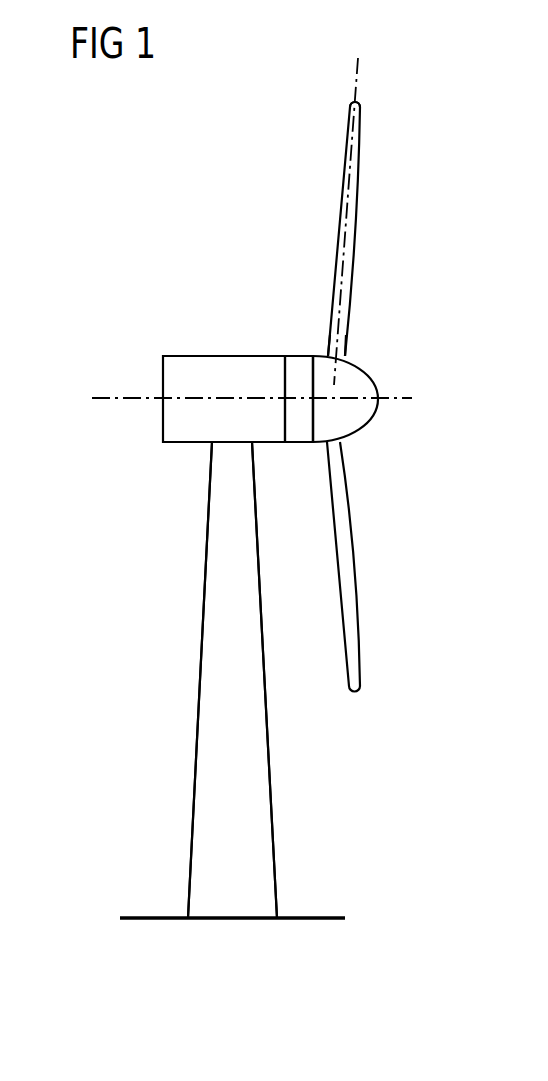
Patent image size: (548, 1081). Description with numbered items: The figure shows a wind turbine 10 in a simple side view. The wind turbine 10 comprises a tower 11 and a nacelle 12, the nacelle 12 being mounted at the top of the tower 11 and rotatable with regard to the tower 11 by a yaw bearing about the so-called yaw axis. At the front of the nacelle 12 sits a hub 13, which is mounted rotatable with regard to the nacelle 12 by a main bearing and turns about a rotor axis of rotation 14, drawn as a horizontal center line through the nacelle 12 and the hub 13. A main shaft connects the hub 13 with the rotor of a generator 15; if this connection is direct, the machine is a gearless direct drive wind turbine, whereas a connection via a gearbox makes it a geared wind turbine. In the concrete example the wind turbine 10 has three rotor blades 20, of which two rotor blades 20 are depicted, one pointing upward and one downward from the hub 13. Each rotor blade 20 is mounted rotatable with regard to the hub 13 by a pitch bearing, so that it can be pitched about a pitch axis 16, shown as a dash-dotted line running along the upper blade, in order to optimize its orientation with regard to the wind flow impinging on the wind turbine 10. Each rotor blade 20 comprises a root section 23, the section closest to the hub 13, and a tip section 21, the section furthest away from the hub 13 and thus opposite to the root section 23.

The wind turbine 10 is at (152, 583).
The tower 11 is at (252, 760).
The nacelle 12 is at (212, 355).
The hub 13 is at (372, 373).
The rotor axis of rotation 14 is at (107, 397).
The generator 15 is at (301, 430).
The pitch axis 16 is at (356, 74).
The rotor blade 20 is at (355, 228).
The tip section 21 is at (362, 117).
The root section 23 is at (352, 328).